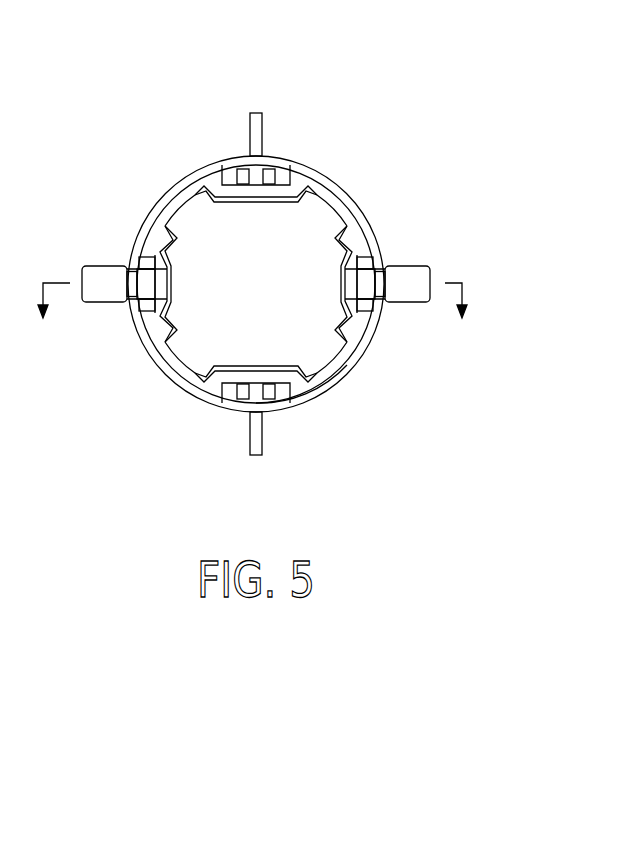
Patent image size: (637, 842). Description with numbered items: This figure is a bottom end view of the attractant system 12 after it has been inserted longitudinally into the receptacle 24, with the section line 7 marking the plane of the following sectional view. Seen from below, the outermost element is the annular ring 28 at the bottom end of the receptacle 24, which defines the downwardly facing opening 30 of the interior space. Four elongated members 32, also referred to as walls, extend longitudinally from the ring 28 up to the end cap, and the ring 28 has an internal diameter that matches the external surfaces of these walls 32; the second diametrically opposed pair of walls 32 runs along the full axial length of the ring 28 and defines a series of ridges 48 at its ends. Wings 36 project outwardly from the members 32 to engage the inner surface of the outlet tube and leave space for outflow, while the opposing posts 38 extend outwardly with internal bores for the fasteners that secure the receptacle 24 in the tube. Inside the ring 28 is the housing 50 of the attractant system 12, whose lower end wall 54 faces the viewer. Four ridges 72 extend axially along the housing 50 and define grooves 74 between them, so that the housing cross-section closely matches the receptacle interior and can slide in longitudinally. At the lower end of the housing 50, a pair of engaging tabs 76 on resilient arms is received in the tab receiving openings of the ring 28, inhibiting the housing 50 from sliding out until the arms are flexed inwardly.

The attractant system 12 is at (293, 254).
The receptacle 24 is at (340, 184).
The annular ring 28 is at (368, 210).
The downwardly facing opening 30 is at (319, 392).
The elongated members 32 is at (280, 172).
The wings 36 is at (258, 112).
The posts 38 is at (430, 276).
The ridges 48 is at (257, 172).
The housing 50 is at (286, 296).
The lower end wall 54 is at (244, 289).
The ridges 72 is at (320, 190).
The grooves 74 is at (300, 190).
The engaging tabs 76 is at (364, 281).
The section line 7- 7 is at (253, 323).